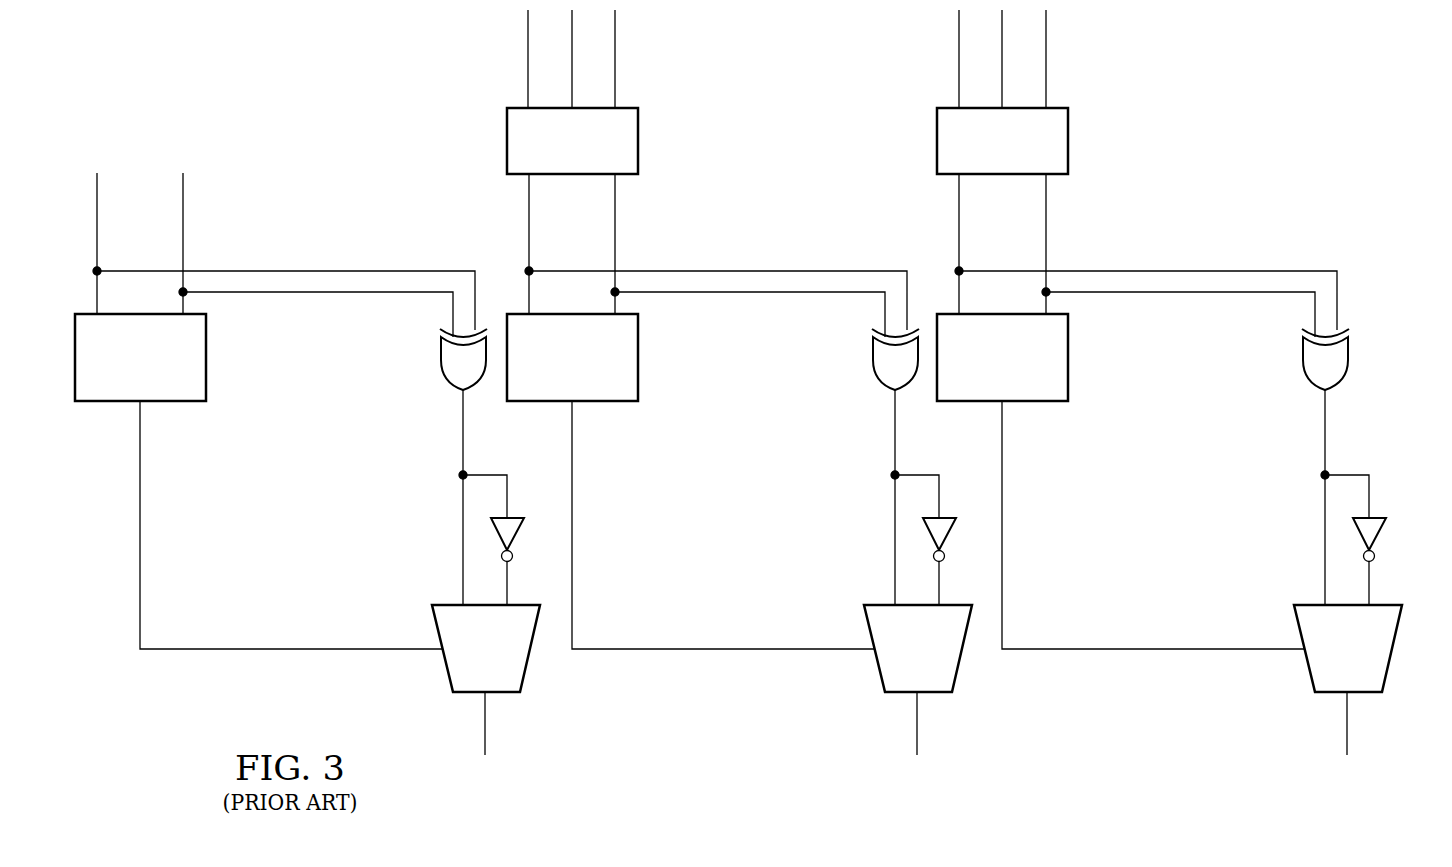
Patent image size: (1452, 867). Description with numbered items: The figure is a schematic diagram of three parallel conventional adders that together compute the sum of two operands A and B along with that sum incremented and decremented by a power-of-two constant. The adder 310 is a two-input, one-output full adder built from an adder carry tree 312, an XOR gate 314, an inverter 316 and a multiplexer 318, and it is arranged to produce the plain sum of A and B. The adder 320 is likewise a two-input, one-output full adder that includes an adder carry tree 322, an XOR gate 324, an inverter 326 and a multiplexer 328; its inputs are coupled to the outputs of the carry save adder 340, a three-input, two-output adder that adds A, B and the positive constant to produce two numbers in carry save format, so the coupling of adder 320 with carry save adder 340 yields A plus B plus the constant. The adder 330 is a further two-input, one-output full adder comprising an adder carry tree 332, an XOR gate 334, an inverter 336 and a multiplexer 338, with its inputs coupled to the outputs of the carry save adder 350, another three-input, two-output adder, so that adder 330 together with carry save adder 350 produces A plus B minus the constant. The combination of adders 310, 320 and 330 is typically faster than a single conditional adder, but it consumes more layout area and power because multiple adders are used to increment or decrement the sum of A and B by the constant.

The adder 310 is at (316, 243).
The adder carry tree 312 is at (110, 402).
The XOR gate 314 is at (441, 358).
The inverter 316 is at (520, 535).
The multiplexer 318 is at (465, 675).
The adder 320 is at (748, 243).
The adder carry tree 322 is at (602, 402).
The XOR gate 324 is at (873, 358).
The inverter 326 is at (952, 535).
The multiplexer 328 is at (897, 675).
The adder 330 is at (1180, 243).
The adder carry tree 332 is at (1034, 402).
The XOR gate 334 is at (1348, 352).
The inverter 336 is at (1380, 533).
The multiplexer 338 is at (1327, 675).
The carry save adder 340 is at (507, 142).
The carry save adder 350 is at (1068, 142).